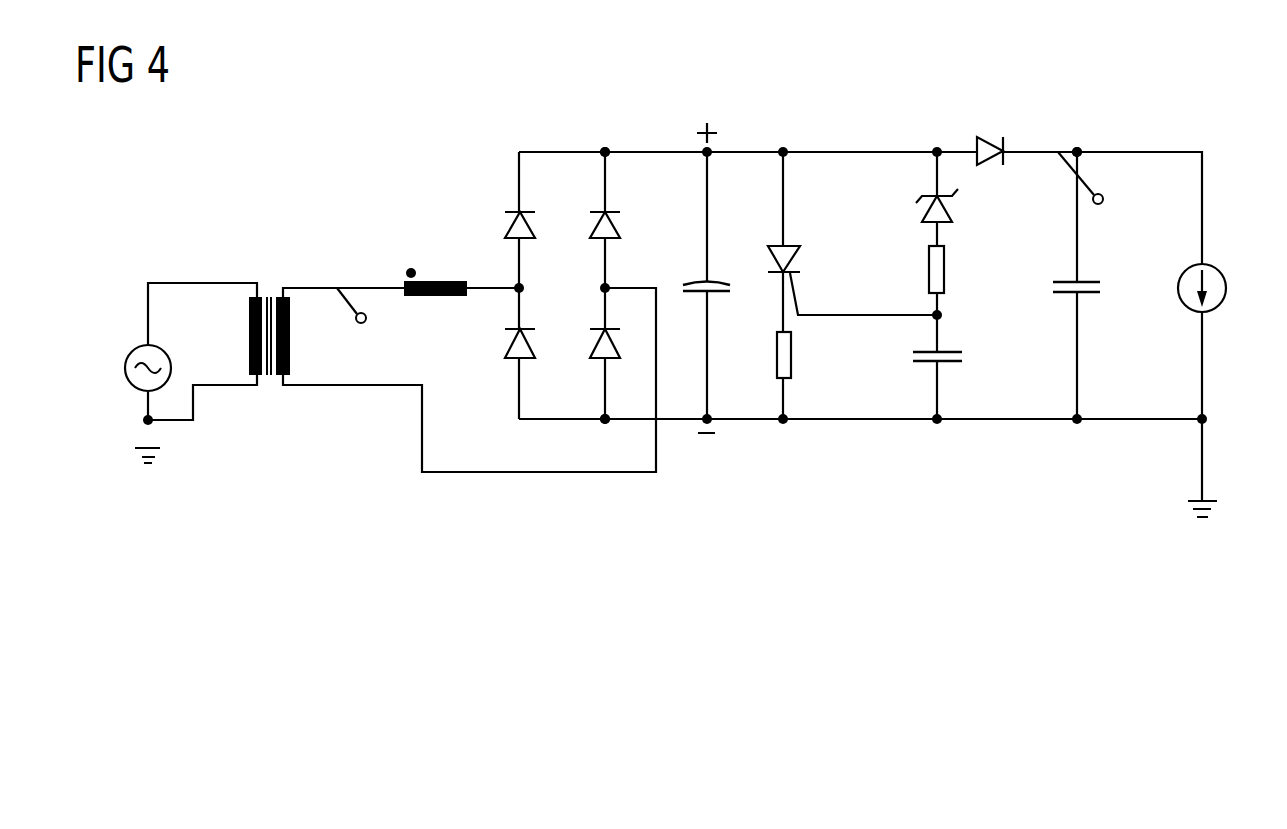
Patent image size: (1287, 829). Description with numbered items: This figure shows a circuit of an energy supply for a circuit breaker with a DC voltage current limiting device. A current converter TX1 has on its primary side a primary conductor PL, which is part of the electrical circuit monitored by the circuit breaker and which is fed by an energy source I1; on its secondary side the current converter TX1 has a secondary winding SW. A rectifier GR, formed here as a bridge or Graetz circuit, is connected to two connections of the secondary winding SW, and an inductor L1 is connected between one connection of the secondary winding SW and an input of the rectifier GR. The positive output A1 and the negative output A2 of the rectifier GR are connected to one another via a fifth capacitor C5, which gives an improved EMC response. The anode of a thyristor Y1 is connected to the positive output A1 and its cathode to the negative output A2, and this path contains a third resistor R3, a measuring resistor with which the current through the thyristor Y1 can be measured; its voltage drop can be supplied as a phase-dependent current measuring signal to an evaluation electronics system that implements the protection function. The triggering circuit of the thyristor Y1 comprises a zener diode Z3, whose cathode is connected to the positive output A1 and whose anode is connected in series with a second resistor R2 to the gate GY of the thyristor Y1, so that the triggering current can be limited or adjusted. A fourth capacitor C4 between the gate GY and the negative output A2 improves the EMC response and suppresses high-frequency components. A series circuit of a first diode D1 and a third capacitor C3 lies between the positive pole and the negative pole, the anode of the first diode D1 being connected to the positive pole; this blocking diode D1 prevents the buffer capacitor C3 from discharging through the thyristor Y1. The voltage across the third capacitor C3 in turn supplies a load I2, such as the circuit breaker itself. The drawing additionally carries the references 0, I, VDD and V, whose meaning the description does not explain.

The energy source I1 is at (133, 352).
The ground reference 0 is at (684, 482).
The current converter TX1 is at (269, 311).
The primary conductor PL is at (249, 335).
The secondary winding SW is at (292, 352).
The switch I is at (360, 312).
The inductor L1 is at (436, 278).
The rectifier GR is at (563, 144).
The positive output A1 is at (634, 136).
The negative output A2 is at (614, 439).
The fifth capacitor C5 is at (697, 278).
The thyristor Y1 is at (791, 245).
The gate GY is at (863, 294).
The third resistor R3 is at (795, 355).
The zener diode Z3 is at (955, 205).
The second resistor R2 is at (948, 270).
The fourth capacitor C4 is at (965, 355).
The first diode D1 is at (993, 143).
The supply voltage node VDD is at (1103, 136).
The voltage measurement switch V is at (1091, 185).
The third capacitor C3 is at (1090, 297).
The load I2 is at (1222, 268).